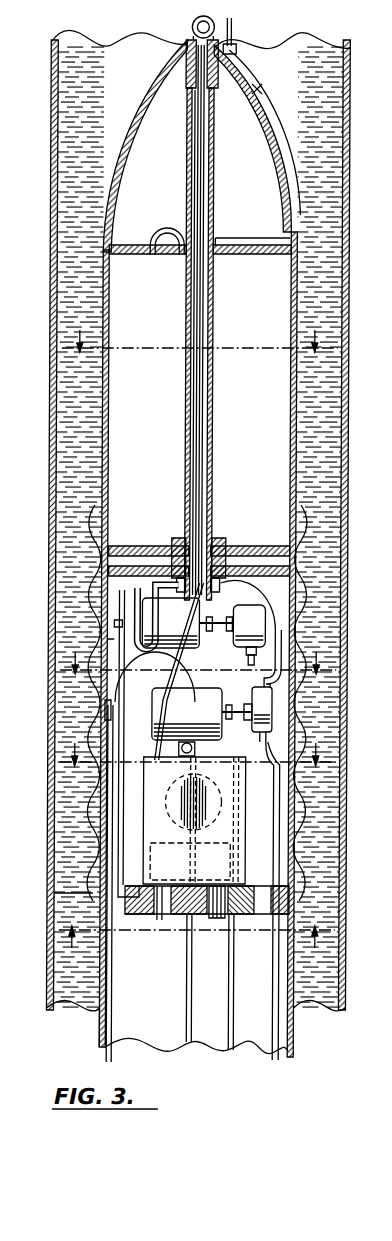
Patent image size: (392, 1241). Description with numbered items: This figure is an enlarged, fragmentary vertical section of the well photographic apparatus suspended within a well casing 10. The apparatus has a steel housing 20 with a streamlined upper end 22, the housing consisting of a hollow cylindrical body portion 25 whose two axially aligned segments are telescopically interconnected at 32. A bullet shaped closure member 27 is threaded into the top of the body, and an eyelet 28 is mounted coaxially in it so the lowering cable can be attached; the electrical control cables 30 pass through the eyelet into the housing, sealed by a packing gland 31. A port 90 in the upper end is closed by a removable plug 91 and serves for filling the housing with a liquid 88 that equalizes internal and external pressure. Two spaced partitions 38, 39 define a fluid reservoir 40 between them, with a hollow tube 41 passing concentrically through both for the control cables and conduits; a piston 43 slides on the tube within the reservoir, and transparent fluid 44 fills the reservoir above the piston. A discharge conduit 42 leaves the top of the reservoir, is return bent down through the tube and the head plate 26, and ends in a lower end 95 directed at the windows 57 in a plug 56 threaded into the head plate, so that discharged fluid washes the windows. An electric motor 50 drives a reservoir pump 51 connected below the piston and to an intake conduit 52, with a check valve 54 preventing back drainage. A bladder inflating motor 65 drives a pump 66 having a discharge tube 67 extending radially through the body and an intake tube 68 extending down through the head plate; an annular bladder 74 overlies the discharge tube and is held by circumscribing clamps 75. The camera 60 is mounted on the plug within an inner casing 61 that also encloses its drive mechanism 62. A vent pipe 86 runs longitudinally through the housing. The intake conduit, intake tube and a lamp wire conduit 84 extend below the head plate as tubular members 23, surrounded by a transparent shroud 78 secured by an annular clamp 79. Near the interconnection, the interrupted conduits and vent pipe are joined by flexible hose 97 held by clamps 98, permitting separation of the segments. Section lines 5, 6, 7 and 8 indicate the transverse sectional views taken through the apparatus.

The well casing 10 is at (358, 55).
The upper end 22 is at (148, 82).
The housing 20 is at (101, 271).
The body portion 25 is at (291, 443).
The closure member 27 is at (148, 112).
The port 90 is at (259, 104).
The removable plug 91 is at (262, 90).
The hollow tube 41 is at (212, 317).
The eyelet 28 is at (191, 26).
The electrical control cables 30 is at (232, 29).
The packing gland 31 is at (237, 47).
The upper partition 38 is at (130, 245).
The vent pipe 86 is at (228, 238).
The discharge conduit 42 is at (170, 224).
The liquid 88 is at (248, 187).
The transparent fluid 44 is at (158, 405).
The fluid reservoir 40 is at (259, 419).
The section line 5- 5 is at (200, 339).
The section line 6- 6 is at (197, 663).
The section line 7- 7 is at (196, 754).
The section line 8- 8 is at (193, 941).
The circumscribing clamps 75 is at (98, 516).
The annular bladder 74 is at (96, 714).
The annular clamp 79 is at (96, 892).
The lower partition 39 is at (140, 567).
The piston 43 is at (266, 547).
The check valve 54 is at (240, 568).
The clamps 98 is at (207, 524).
The telescopically interconnected ends 32 is at (110, 640).
The electric motor 50 is at (150, 611).
The reservoir pump 51 is at (257, 618).
The discharge tube 67 is at (291, 673).
The pump 66 is at (300, 707).
The annular head plate 26 is at (268, 907).
The intake conduit 52 is at (165, 661).
The flexible hose 97 is at (223, 701).
The bladder inflating motor 65 is at (163, 746).
The camera 60 is at (241, 852).
The inner casing 61 is at (237, 813).
The drive mechanism 62 is at (177, 783).
The plug 56 is at (186, 883).
The conduit 84 is at (192, 999).
The windows 57 is at (215, 918).
The lower end 95 is at (136, 906).
The intake tube 68 is at (276, 963).
The tubular members 23 is at (274, 1026).
The shroud 78 is at (97, 1019).